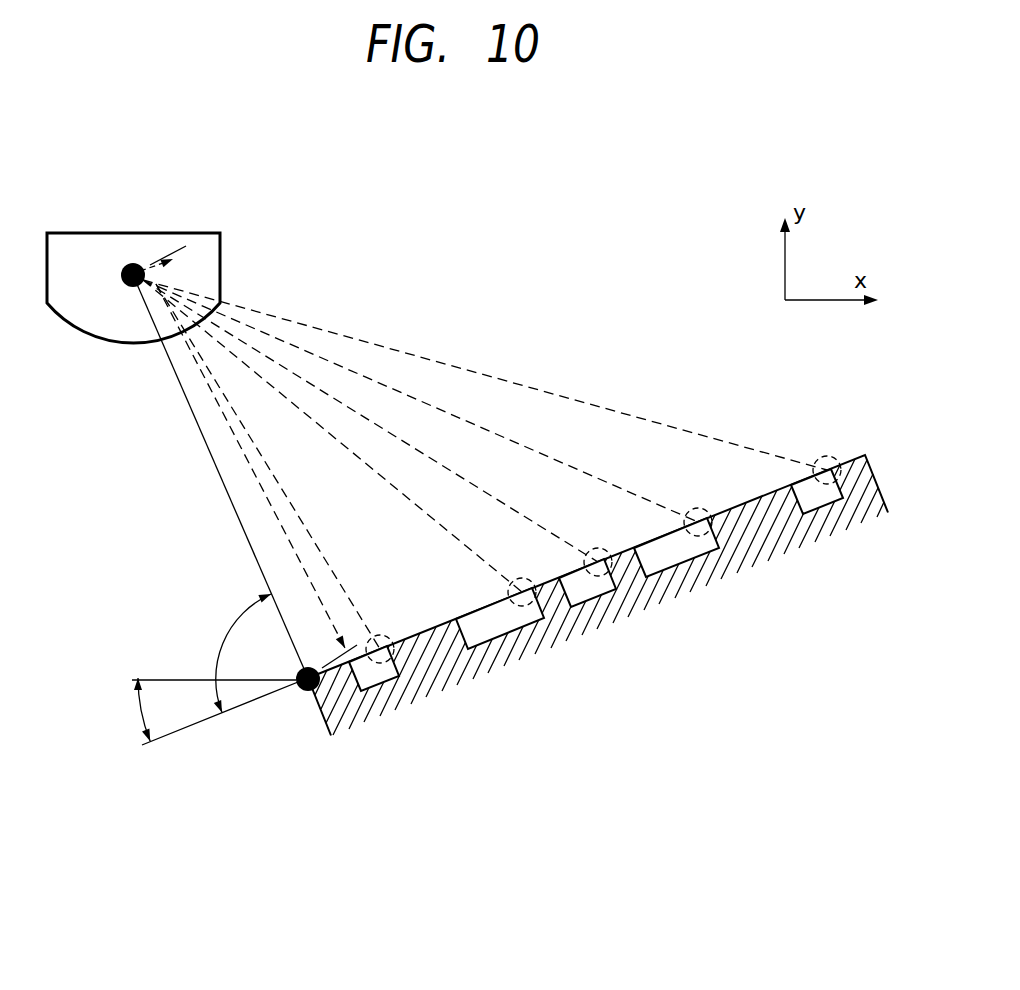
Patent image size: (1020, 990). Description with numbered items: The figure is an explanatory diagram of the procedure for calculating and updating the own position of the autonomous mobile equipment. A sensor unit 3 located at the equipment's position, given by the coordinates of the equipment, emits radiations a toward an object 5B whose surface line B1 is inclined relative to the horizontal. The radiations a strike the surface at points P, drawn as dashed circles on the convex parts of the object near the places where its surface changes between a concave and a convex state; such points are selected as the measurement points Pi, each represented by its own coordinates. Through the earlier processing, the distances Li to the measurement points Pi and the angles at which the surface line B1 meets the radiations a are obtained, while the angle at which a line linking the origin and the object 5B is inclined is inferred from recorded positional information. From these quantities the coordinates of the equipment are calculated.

The distance sensor (laser range finder) 3 is at (222, 257).
The object 5B is at (882, 478).
The surface line B1 is at (487, 612).
The measurement point on wall P is at (811, 448).
The measurement points Pi is at (307, 706).
The radiations a is at (590, 398).
The distances Li is at (268, 466).